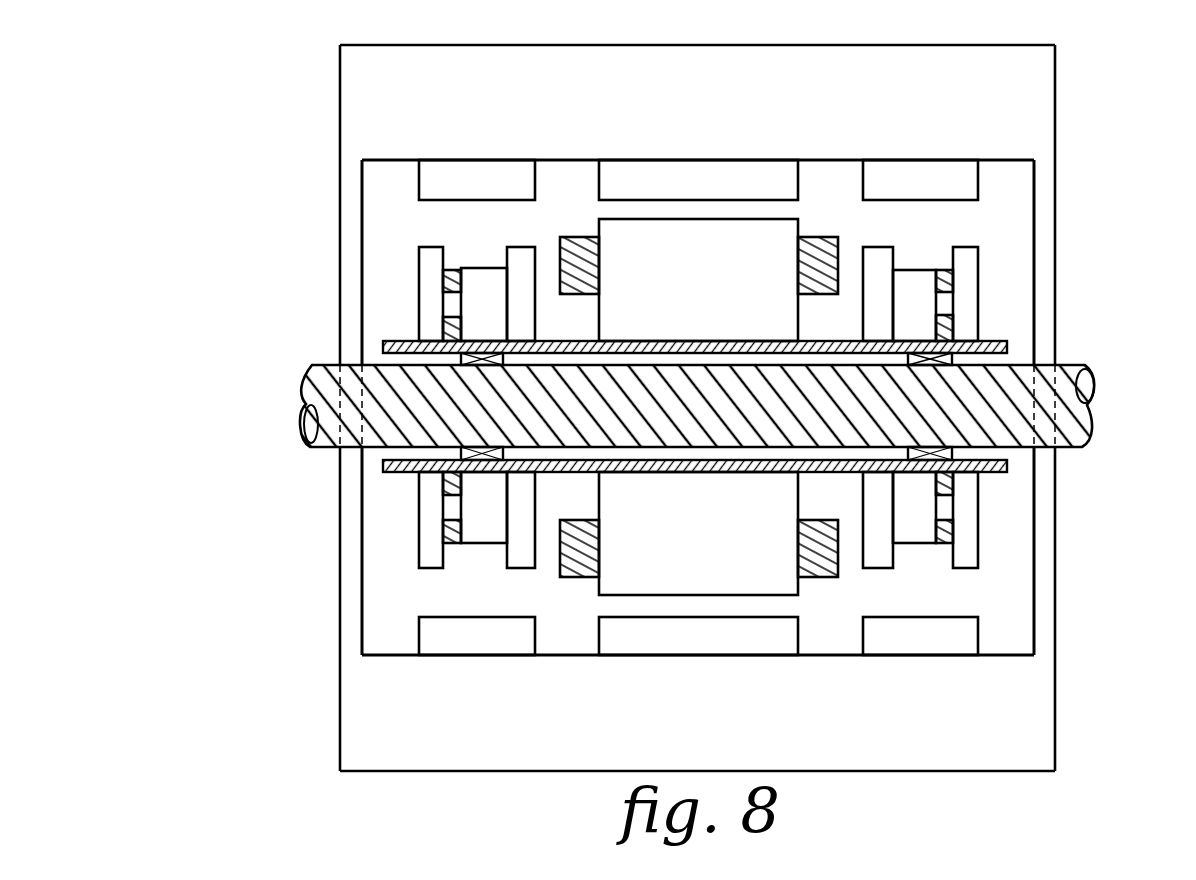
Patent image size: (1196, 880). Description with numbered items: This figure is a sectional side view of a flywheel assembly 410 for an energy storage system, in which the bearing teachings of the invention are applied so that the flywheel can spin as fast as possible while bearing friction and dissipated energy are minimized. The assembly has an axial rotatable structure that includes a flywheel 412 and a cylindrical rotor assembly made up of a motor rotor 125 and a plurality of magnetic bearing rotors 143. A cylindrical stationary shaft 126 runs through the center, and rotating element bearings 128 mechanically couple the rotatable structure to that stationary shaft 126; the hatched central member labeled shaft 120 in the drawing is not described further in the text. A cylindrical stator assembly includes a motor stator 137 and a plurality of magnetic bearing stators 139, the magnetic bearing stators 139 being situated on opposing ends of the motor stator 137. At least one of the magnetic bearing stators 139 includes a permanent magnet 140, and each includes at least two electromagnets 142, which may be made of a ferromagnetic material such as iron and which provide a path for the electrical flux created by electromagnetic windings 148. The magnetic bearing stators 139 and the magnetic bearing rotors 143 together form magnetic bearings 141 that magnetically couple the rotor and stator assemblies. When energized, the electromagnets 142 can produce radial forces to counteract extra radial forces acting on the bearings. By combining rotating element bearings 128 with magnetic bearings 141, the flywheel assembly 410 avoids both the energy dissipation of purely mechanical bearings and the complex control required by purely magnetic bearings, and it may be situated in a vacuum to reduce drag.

The flywheel assembly 410 is at (300, 94).
The flywheel 412 is at (456, 109).
The motor rotor 125 is at (674, 174).
The magnetic bearing rotors 143 is at (918, 174).
The motor stator 137 is at (674, 305).
The cylindrical stationary shaft 126 is at (384, 345).
The rotating element bearings 128 is at (498, 453).
The shaft 120 is at (484, 420).
The permanent magnet 140 is at (919, 275).
The magnetic bearings 141 is at (1006, 253).
The electromagnets 142 is at (950, 507).
The magnetic bearing stators 139 is at (1013, 563).
The electromagnetic windings 148 is at (940, 545).